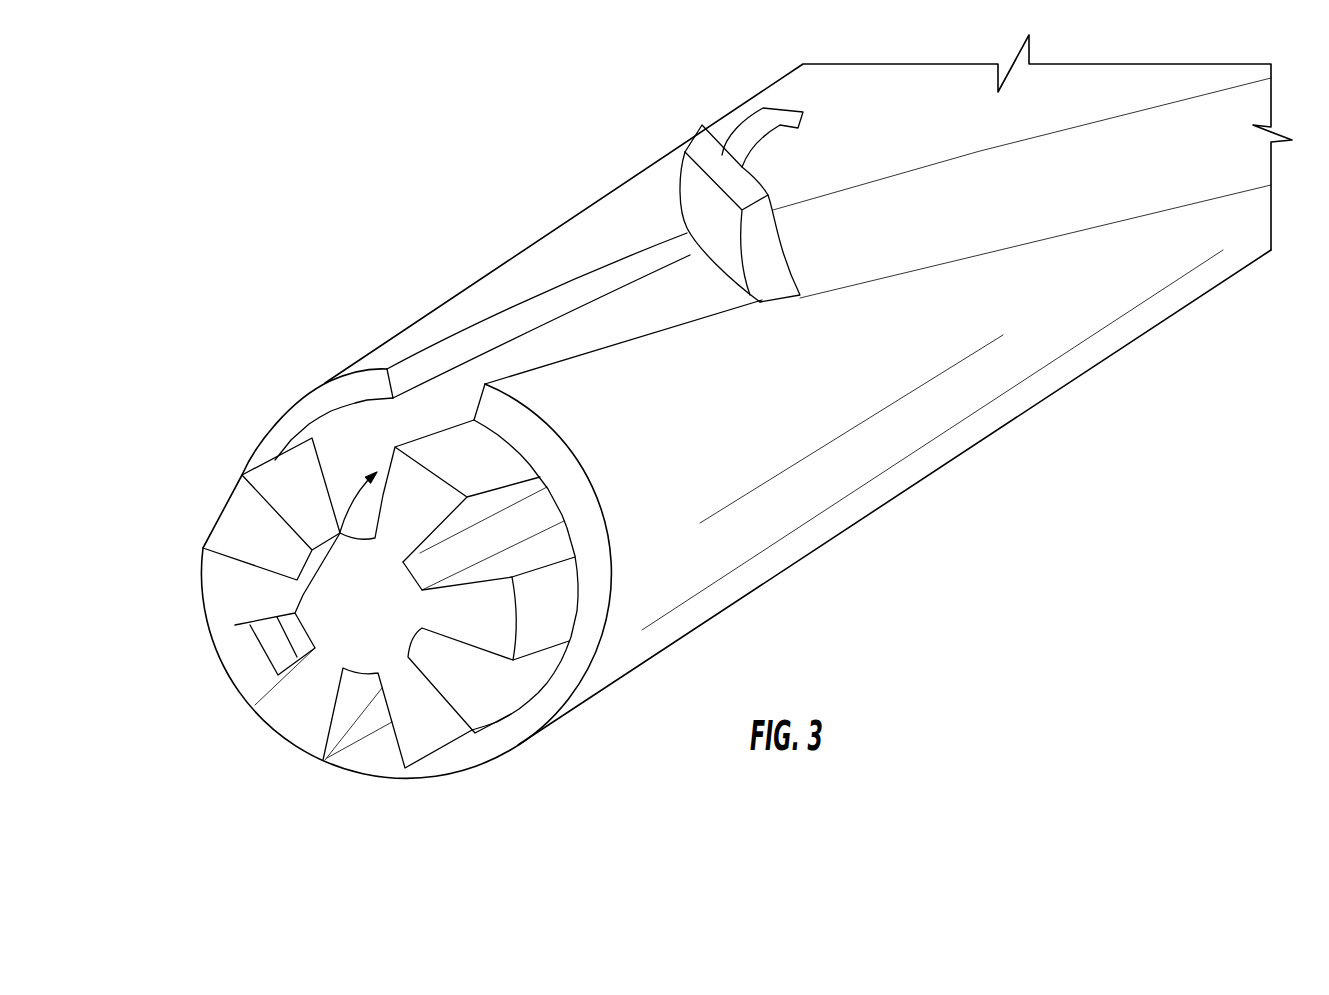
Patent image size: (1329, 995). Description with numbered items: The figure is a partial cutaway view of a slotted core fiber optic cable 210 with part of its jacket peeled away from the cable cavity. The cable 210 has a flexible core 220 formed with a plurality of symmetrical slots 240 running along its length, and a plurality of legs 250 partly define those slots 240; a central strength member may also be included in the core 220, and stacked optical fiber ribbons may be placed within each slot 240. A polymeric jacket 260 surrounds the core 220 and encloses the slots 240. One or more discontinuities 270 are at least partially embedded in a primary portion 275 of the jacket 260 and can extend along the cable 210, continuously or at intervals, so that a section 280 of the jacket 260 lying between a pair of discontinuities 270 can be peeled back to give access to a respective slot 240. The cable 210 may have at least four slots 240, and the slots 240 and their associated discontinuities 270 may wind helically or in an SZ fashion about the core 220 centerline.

The slotted core cable 210 is at (287, 237).
The flexible core 220 is at (220, 522).
The slots 240 is at (463, 668).
The legs 250 is at (293, 513).
The polymeric jacket 260 is at (848, 555).
The discontinuities 270 is at (679, 257).
The primary portion 275 is at (940, 466).
The section 280 is at (767, 155).